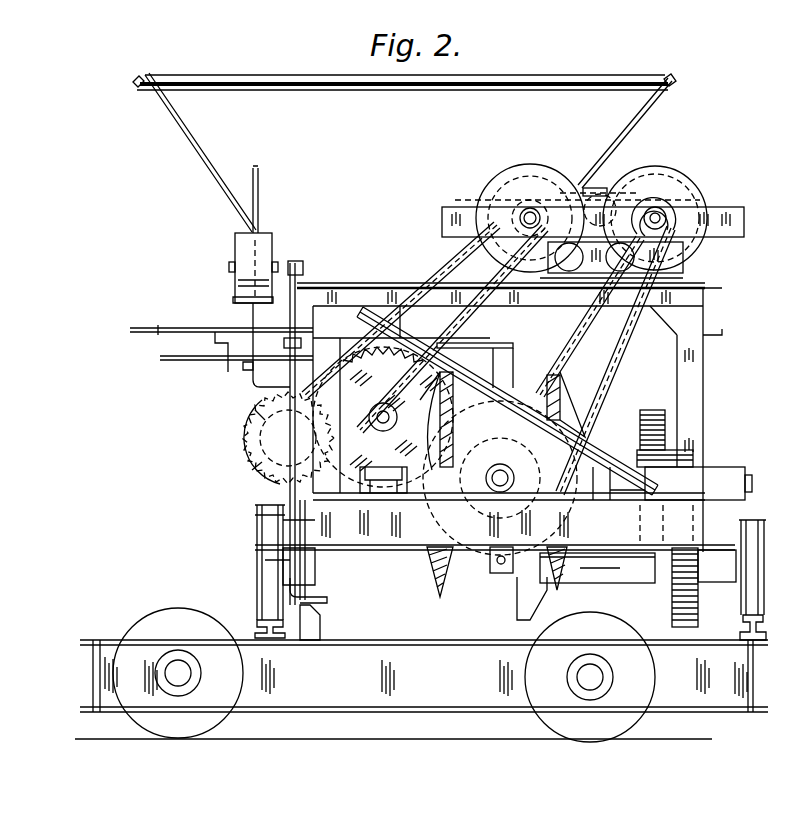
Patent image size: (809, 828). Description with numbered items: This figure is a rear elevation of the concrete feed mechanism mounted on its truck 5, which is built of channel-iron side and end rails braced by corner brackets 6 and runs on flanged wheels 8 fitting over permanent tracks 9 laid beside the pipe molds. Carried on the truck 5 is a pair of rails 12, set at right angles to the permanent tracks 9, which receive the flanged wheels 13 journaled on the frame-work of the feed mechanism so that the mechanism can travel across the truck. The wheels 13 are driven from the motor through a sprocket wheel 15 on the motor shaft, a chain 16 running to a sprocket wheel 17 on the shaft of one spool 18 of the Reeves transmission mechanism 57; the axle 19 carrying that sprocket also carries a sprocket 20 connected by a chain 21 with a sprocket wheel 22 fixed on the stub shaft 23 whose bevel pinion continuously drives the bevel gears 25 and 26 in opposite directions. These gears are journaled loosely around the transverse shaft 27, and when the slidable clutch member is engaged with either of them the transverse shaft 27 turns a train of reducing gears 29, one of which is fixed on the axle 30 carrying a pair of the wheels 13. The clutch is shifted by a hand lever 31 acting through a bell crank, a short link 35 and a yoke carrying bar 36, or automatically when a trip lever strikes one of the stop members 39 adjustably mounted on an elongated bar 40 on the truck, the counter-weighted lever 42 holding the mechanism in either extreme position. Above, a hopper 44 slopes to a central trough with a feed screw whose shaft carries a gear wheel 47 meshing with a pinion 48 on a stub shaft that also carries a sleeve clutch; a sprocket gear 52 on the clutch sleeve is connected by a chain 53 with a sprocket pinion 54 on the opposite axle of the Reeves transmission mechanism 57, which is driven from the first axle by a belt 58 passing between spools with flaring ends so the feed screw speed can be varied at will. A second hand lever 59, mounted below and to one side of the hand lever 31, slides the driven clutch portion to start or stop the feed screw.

The truck 5 is at (708, 697).
The corner brackets 6 is at (702, 368).
The flanged wheels 8 is at (614, 735).
The permanent tracks 9 is at (492, 740).
The rails 12 is at (767, 633).
The flanged wheels 13 is at (267, 590).
The sprocket wheel 15 is at (515, 478).
The chain 16 is at (590, 366).
The sprocket wheel 17 is at (697, 199).
The spool 18 is at (652, 180).
The axle 19 is at (660, 214).
The sprocket 20 is at (668, 228).
The chain 21 is at (614, 378).
The sprocket wheel 22 is at (440, 500).
The stub shaft 23 is at (497, 492).
The bevel gear 25 is at (562, 585).
The bevel gear 26 is at (435, 597).
The transverse shaft 27 is at (752, 474).
The train of reducing gears 29 is at (665, 427).
The axle 30 is at (640, 583).
The hand lever 31 is at (170, 328).
The short link 35 is at (473, 345).
The yoke carrying bar 36 is at (497, 358).
The stop members 39 is at (322, 597).
The elongated bar 40 is at (318, 624).
The counter-weighted lever 42 is at (258, 200).
The hopper 44 is at (627, 108).
The gear wheel 47 is at (345, 490).
The pinion 48 is at (267, 450).
The sprocket gear 52 is at (255, 418).
The chain 53 is at (433, 282).
The sprocket pinion 54 is at (520, 218).
The Reeves transmission mechanism 57 is at (540, 178).
The belt 58 is at (600, 192).
The hand lever 59 is at (176, 361).